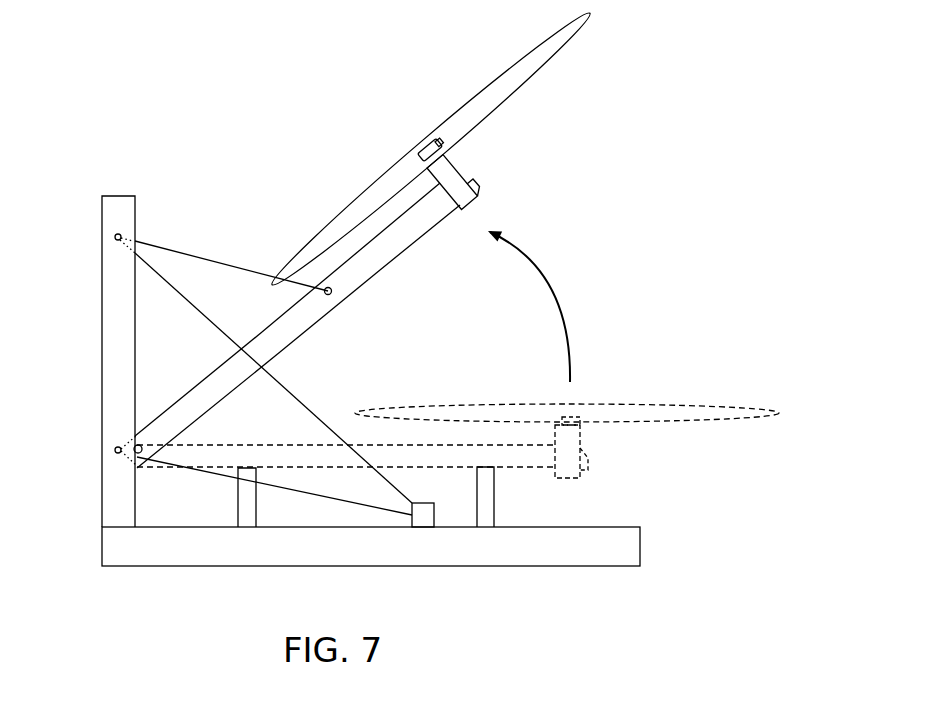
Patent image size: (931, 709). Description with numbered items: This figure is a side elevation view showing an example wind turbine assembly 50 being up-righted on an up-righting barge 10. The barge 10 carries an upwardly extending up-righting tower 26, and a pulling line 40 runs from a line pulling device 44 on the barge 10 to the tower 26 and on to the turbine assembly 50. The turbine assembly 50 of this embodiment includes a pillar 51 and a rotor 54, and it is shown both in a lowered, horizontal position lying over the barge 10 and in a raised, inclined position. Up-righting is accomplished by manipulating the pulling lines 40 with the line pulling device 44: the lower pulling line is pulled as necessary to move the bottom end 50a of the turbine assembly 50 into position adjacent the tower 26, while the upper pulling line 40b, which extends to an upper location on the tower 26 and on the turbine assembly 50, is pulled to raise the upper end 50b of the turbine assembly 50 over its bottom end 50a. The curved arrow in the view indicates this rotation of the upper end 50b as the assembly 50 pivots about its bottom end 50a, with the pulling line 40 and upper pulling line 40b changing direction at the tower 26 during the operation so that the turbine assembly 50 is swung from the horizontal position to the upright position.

The up-righting barge 10 is at (323, 526).
The second up-righting tower 26 is at (101, 362).
The pulling line 40 is at (157, 243).
The upper pulling line 40b is at (227, 264).
The line pulling device 44 is at (434, 527).
The wind turbine assembly 50 is at (350, 296).
The bottom end of turbine assembly 50a is at (152, 392).
The upper end of turbine assembly 50b is at (441, 235).
The pillar 51 is at (395, 232).
The rotor 54 is at (490, 88).